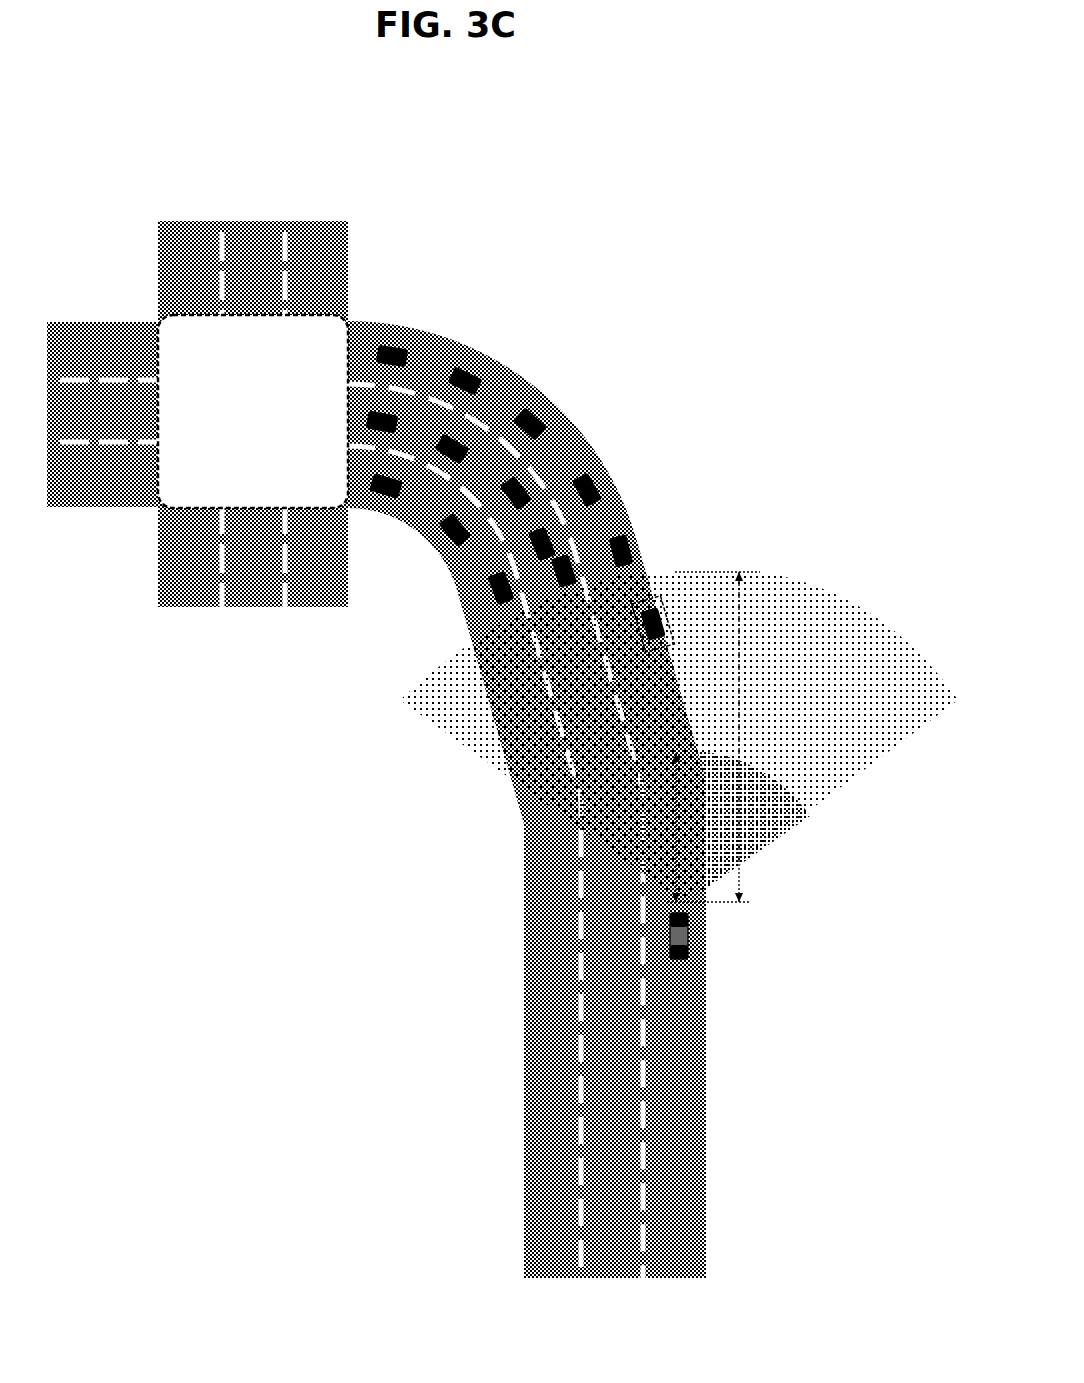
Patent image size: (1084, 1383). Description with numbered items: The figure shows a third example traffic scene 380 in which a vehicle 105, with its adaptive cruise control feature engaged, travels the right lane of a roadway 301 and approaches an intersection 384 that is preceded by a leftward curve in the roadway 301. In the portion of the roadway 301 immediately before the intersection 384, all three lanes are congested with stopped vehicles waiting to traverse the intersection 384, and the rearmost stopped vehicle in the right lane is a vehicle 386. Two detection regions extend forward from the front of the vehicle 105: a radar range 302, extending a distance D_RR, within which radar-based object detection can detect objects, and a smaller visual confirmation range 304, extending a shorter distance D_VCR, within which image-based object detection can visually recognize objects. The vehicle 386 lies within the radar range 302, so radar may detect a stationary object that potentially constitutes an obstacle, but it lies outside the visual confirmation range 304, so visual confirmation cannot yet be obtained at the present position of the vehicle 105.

The traffic scene 380 is at (764, 151).
The roadway 301 is at (612, 1297).
The intersection 384 is at (265, 434).
The radar range 302 is at (459, 706).
The visual confirmation range 304 is at (611, 814).
The vehicle 386 is at (695, 544).
The vehicle 105 is at (700, 941).